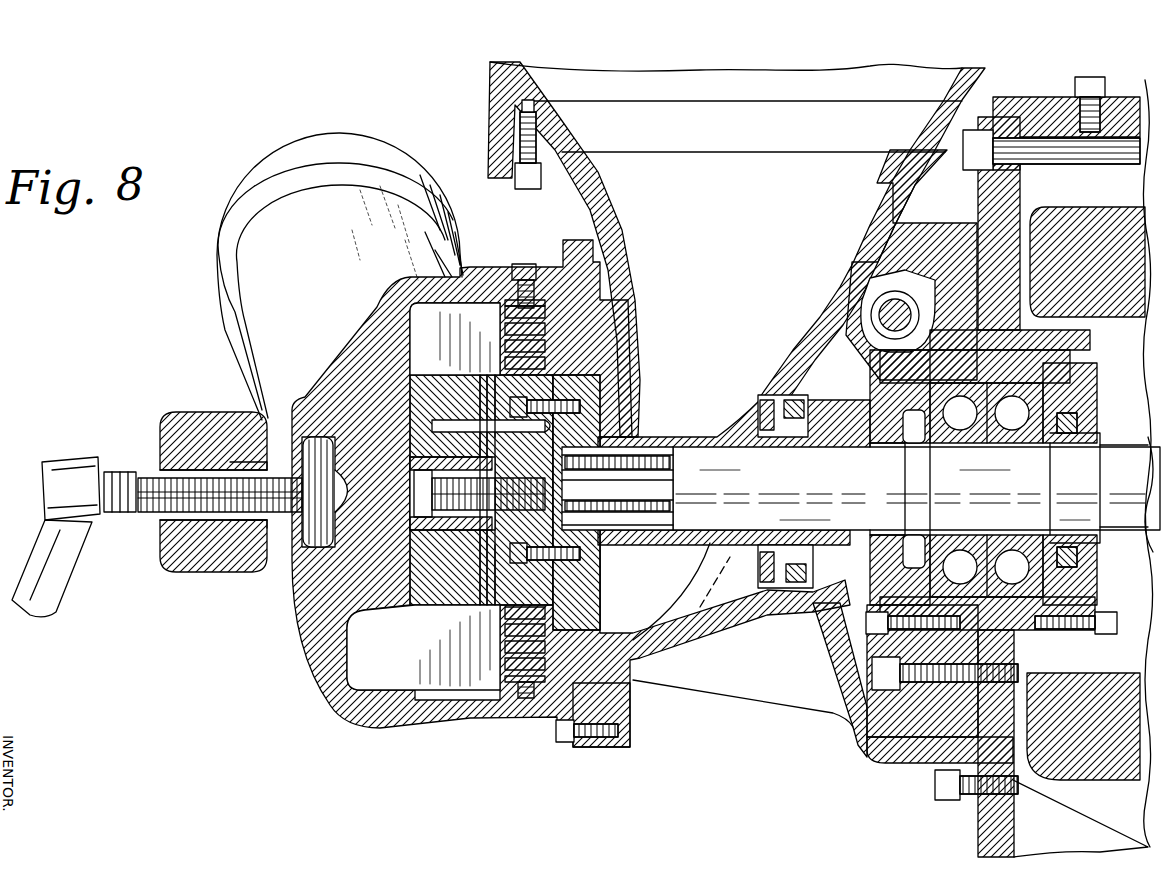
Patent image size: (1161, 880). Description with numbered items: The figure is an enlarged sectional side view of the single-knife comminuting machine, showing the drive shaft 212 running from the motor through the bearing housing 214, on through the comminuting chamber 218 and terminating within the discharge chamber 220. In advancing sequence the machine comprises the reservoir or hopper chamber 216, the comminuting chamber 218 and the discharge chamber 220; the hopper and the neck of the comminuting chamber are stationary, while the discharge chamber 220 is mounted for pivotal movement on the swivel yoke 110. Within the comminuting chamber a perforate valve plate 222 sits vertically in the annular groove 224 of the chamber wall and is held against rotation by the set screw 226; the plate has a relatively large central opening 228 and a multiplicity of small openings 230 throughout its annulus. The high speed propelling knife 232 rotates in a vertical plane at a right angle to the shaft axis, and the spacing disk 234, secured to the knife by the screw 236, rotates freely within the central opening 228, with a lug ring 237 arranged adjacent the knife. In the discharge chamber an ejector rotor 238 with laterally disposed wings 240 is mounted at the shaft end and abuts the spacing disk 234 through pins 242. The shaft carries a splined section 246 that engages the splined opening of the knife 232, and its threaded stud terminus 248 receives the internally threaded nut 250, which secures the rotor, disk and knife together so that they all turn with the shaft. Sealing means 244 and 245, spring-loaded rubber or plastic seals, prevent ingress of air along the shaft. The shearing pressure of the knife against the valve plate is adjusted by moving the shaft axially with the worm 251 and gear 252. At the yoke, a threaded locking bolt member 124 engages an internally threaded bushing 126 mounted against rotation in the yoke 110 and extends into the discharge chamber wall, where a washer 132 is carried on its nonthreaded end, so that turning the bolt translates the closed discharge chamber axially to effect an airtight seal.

The swivel yoke 110 is at (205, 424).
The threaded locking bolt member 124 is at (125, 512).
The internally threaded bushing 126 is at (170, 472).
The washer 132 is at (324, 548).
The drive shaft 212 is at (784, 484).
The bearing housing 214 is at (1112, 370).
The reservoir or hopper chamber 216 is at (748, 182).
The comminuting chamber 218 is at (547, 700).
The discharge chamber 220 is at (441, 692).
The perforate valve plate 222 is at (548, 345).
The annular groove 224 is at (522, 720).
The set screw 226 is at (522, 264).
The central opening 228 is at (505, 616).
The small openings 230 is at (537, 366).
The high speed propelling knife 232 is at (560, 386).
The spacing disk 234 is at (545, 572).
The screw 236 is at (575, 557).
The lug ring 237 is at (548, 352).
The ejector rotor 238 is at (402, 398).
The wings 240 is at (462, 341).
The pins 242 is at (432, 426).
The sealing means 244 is at (768, 396).
The sealing means 245 is at (862, 446).
The splined section 246 is at (618, 465).
The stud terminus 248 is at (485, 493).
The internally threaded nut 250 is at (446, 530).
The worm 251 is at (912, 290).
The gear 252 is at (836, 335).